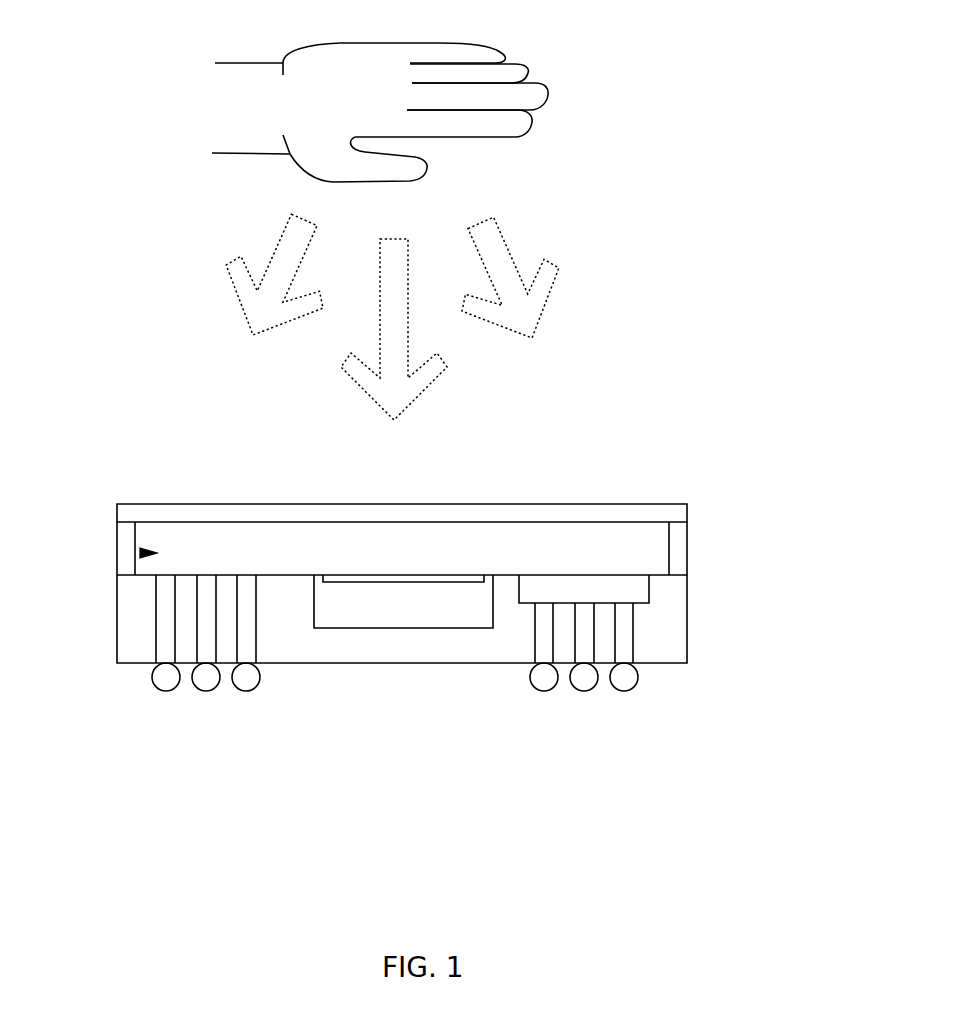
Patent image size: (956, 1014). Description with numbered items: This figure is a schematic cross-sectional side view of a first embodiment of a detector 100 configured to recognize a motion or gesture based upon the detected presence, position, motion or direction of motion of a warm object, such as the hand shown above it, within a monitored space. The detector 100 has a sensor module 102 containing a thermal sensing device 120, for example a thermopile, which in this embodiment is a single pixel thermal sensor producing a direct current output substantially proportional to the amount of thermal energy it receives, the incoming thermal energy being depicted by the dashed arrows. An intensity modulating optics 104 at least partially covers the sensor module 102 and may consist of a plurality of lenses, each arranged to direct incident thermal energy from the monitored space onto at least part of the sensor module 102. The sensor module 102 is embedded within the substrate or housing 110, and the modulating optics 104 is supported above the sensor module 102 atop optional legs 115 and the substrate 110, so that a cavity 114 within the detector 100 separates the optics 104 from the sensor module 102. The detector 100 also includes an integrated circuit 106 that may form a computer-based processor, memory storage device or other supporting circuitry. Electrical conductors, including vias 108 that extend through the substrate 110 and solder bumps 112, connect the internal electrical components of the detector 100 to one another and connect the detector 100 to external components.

The detector 100 is at (652, 288).
The sensor module 102 is at (403, 601).
The intensity modulating optics 104 is at (152, 500).
The integrated circuit 106 is at (597, 593).
The vias 108 is at (157, 632).
The substrate or housing 110 is at (672, 610).
The solder bumps 112 is at (173, 690).
The cavity 114 is at (140, 553).
The legs 115 is at (680, 532).
The thermal sensing device 120 is at (350, 585).